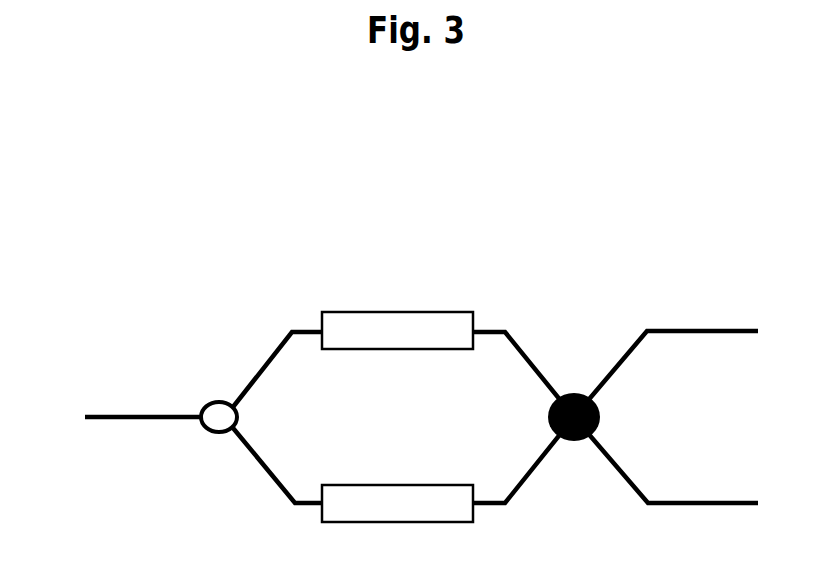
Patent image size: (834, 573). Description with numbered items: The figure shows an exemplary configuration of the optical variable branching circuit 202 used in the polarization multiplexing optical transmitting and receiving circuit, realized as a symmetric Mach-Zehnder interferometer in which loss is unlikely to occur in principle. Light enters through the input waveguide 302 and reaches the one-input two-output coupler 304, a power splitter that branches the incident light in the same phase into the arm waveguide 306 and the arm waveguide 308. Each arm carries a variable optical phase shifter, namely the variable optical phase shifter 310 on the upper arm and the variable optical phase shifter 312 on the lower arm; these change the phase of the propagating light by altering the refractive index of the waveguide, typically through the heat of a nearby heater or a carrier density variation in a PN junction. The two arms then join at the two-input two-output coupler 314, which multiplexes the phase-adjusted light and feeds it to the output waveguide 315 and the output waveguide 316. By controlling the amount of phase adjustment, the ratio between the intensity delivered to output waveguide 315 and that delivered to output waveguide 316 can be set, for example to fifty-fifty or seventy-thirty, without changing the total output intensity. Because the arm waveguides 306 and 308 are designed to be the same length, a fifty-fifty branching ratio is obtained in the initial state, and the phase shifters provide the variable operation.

The optical variable branching circuit 202 is at (522, 232).
The input waveguide 302 is at (152, 415).
The 1-input 2-output coupler 304 is at (215, 435).
The arm waveguide 306 is at (263, 366).
The arm waveguide 308 is at (256, 474).
The variable optical phase shifter 310 is at (398, 312).
The variable optical phase shifter 312 is at (398, 485).
The 2-input 2-output coupler 314 is at (575, 396).
The output waveguide 315 is at (717, 330).
The output waveguide 316 is at (716, 502).